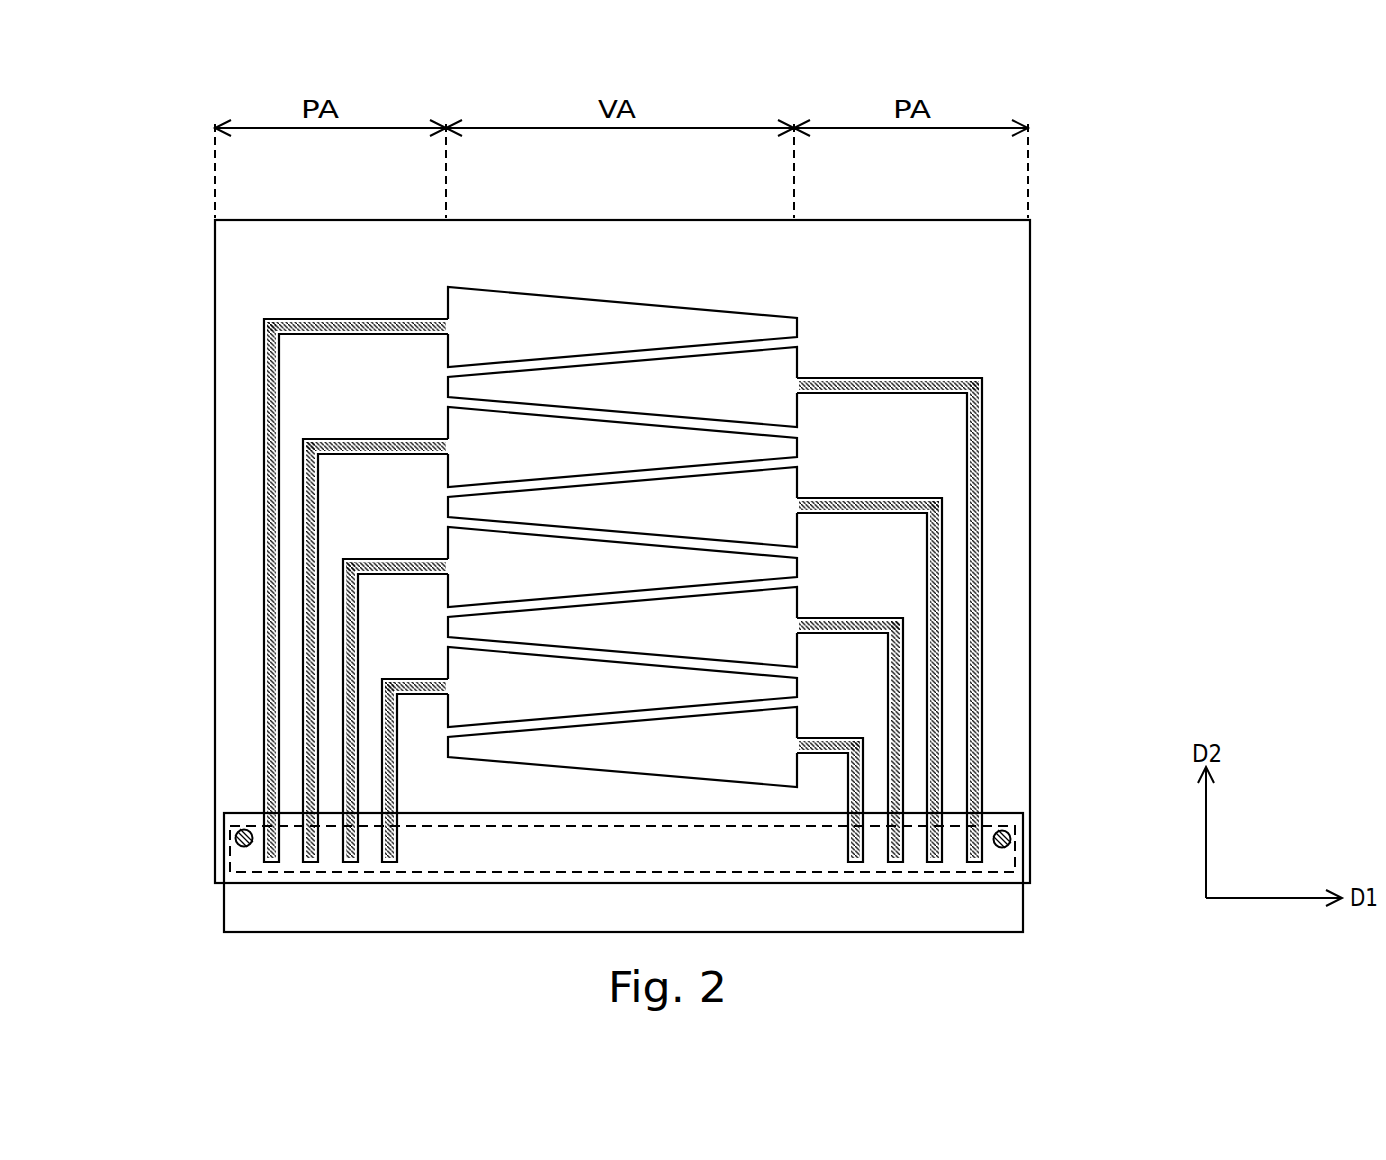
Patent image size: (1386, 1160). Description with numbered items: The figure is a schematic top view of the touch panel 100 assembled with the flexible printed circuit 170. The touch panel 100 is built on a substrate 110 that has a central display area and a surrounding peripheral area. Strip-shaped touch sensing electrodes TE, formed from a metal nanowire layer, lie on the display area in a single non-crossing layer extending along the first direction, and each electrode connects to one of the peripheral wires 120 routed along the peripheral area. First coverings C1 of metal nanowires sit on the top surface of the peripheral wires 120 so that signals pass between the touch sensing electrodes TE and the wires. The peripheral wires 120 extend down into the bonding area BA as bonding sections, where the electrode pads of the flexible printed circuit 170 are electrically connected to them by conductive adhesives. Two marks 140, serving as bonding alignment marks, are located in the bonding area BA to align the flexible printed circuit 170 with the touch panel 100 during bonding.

The touch panel 100 is at (89, 203).
The substrate 110 is at (238, 263).
The peripheral wires 120 is at (556, 590).
The marks 140 is at (238, 843).
The flexible printed circuit 170 is at (1013, 925).
The touch sensing electrodes TE is at (596, 322).
The first coverings C1 is at (265, 416).
The bonding area BA is at (230, 835).